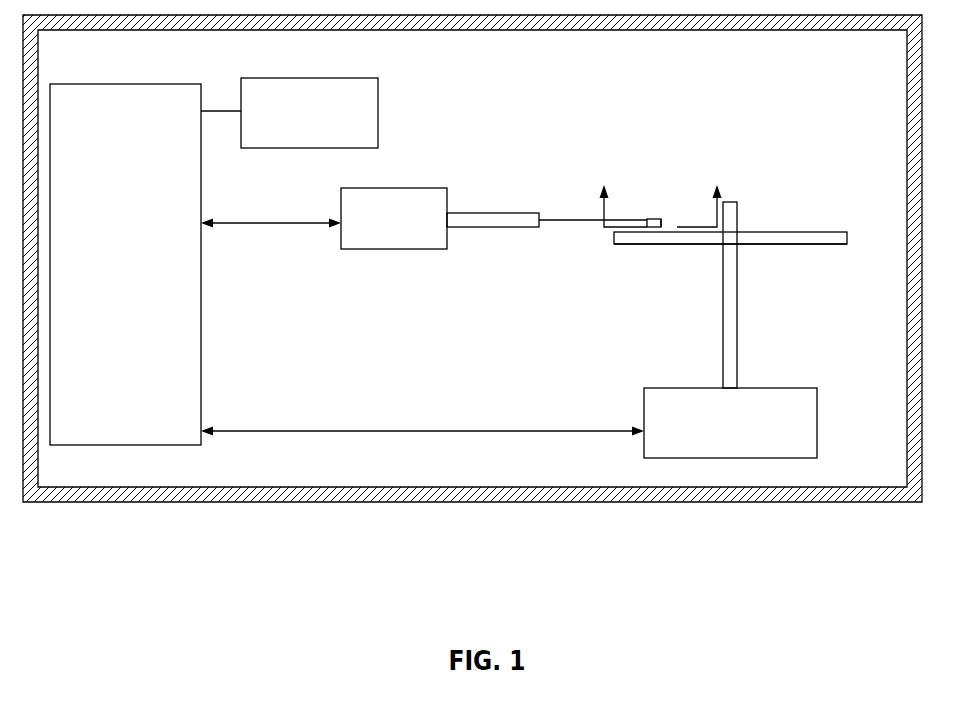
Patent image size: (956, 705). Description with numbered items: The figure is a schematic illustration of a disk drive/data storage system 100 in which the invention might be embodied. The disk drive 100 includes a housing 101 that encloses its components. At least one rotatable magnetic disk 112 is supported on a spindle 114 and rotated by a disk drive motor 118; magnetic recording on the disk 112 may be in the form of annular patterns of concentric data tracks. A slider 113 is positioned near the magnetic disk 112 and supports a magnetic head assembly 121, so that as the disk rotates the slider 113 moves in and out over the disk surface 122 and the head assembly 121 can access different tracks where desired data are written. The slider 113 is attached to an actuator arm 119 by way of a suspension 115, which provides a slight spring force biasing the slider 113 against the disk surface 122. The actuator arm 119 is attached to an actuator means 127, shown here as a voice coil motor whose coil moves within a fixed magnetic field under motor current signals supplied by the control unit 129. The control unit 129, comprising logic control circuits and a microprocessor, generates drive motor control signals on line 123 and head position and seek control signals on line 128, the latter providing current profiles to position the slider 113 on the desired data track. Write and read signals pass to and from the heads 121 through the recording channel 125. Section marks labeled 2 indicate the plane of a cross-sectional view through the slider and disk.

The disk drive/data storage system 100 is at (472, 277).
The housing 101 is at (540, 502).
The control unit 129 is at (102, 108).
The recording channel 125 is at (298, 78).
The actuator means 127 is at (397, 188).
The line 128 is at (250, 226).
The actuator arm 119 is at (477, 213).
The suspension 115 is at (590, 219).
The slider 113 is at (652, 219).
The magnetic head assembly 121 is at (661, 222).
The section line 2- 2 is at (661, 193).
The disk surface 122 is at (808, 232).
The magnetic disk 112 is at (843, 253).
The spindle 114 is at (723, 290).
The disk drive motor 118 is at (777, 388).
The line 123 is at (421, 432).